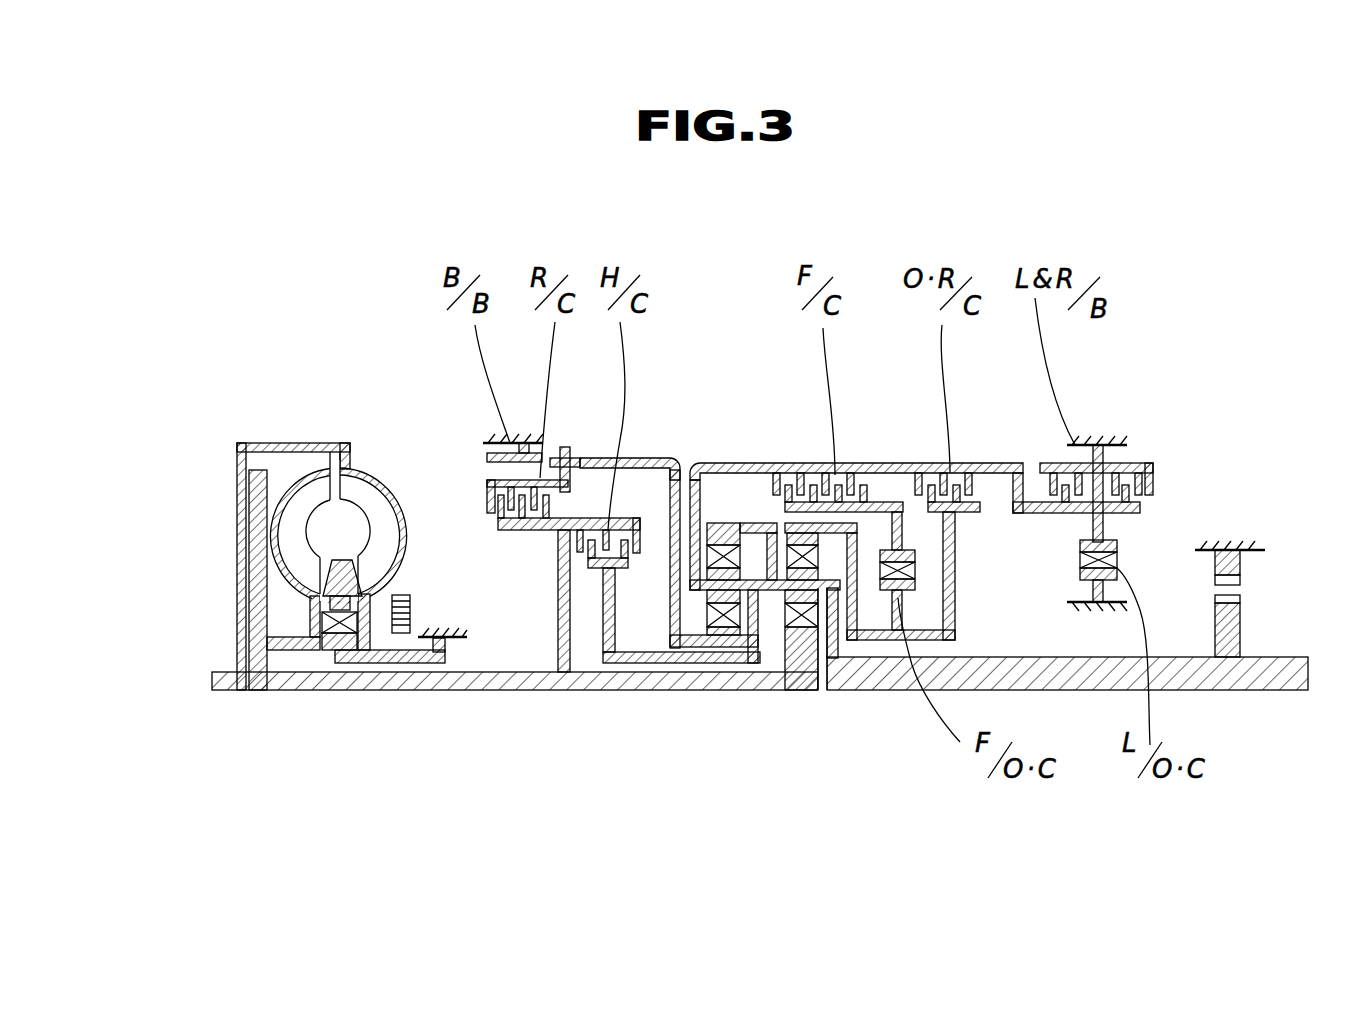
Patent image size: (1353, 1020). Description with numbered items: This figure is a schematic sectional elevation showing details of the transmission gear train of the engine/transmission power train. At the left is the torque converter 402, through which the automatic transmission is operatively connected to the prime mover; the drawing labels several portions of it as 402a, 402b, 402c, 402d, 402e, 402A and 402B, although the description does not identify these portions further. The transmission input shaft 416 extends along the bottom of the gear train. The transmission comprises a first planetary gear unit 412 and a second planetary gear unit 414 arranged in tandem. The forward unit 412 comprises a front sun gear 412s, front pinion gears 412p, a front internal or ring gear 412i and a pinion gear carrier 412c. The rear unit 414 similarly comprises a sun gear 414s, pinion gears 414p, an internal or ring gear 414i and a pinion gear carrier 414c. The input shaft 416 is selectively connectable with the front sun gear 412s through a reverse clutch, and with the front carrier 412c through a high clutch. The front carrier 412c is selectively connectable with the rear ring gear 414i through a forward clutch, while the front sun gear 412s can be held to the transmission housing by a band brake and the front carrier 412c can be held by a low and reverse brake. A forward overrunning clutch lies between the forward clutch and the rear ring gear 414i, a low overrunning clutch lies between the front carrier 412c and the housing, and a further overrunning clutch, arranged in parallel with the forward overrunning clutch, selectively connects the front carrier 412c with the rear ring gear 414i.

The torque converter 402 is at (311, 476).
The housing 402a is at (252, 443).
The hub 402c is at (313, 490).
The inner chamber 402A is at (333, 462).
The annular chamber 402b is at (373, 497).
The plate 402e is at (258, 528).
The cover wall 402B is at (240, 572).
The piston member 402d is at (357, 572).
The transmission input shaft 416 is at (480, 693).
The first planetary gear unit 412 is at (700, 549).
The front sun gear 412s is at (715, 618).
The front pinion gears 412p is at (740, 640).
The front pinion gear carrier 412c is at (752, 655).
The front internal or ring gear 412i is at (720, 525).
The second planetary gear unit 414 is at (848, 578).
The rear sun gear 414s is at (803, 645).
The rear pinion gears 414p is at (832, 625).
The rear pinion gear carrier 414c is at (852, 640).
The rear internal or ring gear 414i is at (792, 530).